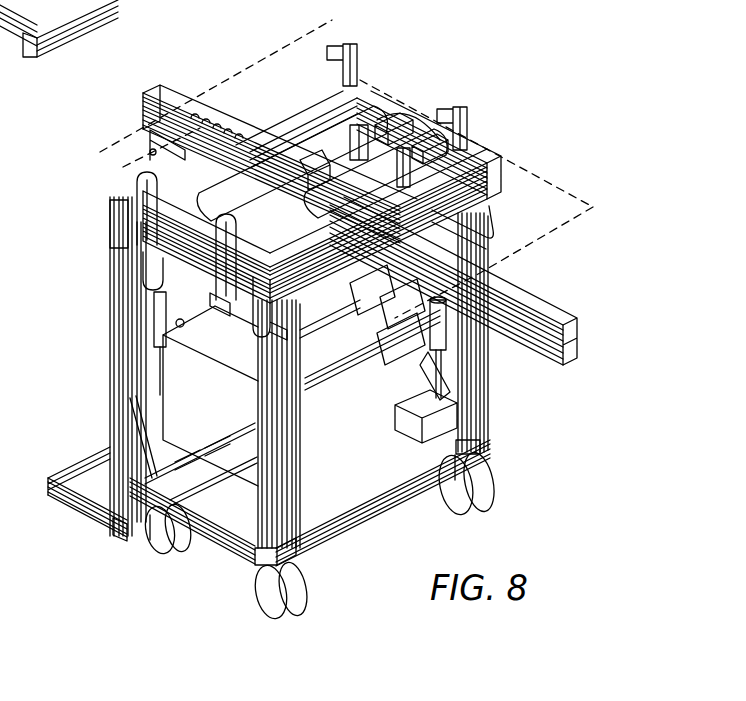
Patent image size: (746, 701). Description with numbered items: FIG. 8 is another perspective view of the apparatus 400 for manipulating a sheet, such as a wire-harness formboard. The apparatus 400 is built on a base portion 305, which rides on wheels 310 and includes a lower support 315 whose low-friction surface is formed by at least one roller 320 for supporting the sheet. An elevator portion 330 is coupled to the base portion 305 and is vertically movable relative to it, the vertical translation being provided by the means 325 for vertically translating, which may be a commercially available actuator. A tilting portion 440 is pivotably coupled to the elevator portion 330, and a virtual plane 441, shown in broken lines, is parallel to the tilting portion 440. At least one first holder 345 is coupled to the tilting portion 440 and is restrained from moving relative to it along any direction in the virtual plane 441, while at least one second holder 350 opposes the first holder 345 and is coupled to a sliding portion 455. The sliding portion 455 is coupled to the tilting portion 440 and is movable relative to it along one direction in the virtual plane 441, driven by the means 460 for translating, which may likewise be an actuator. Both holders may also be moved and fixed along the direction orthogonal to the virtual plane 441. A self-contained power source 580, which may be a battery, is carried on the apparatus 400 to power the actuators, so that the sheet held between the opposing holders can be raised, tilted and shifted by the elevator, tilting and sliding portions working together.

The base portion 305 is at (191, 587).
The wheels 310 is at (127, 0).
The lower support 315 is at (50, 43).
The roller 320 is at (93, 480).
The means for vertically translating 325 is at (443, 393).
The elevator portion 330 is at (140, 340).
The first holder 345 is at (137, 193).
The second holder 350 is at (337, 45).
The apparatus 400 is at (83, 553).
The tilting portion 440 is at (293, 97).
The virtual plane 441 is at (574, 195).
The sliding portion 455 is at (250, 130).
The means for translating 460 is at (348, 122).
The self-contained power source 580 is at (187, 387).